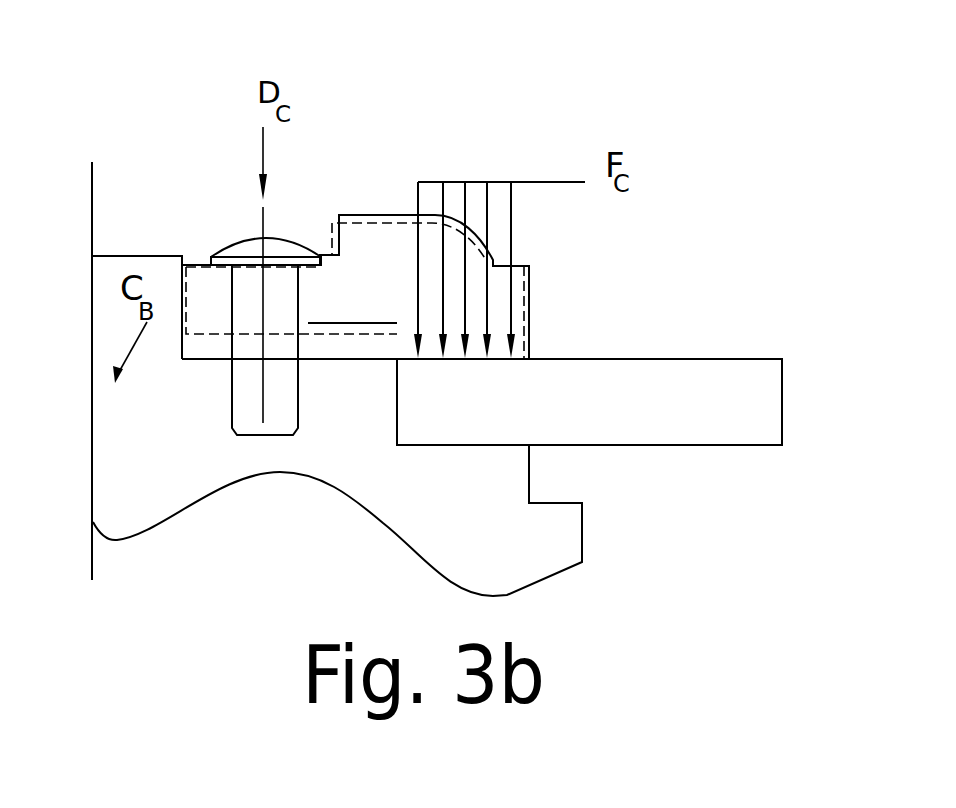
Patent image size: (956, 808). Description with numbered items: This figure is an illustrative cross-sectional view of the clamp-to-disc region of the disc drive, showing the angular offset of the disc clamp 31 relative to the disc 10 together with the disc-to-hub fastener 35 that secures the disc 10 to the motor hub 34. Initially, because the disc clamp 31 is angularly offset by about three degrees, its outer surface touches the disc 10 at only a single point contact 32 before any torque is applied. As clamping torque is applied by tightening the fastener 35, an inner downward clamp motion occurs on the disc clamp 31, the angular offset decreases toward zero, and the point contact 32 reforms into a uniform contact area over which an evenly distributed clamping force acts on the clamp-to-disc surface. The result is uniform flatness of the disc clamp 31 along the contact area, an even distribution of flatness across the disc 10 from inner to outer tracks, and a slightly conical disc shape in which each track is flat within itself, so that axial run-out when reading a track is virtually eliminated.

The disc 10 is at (682, 358).
The disc clamp 31 is at (396, 304).
The point contact 32 is at (529, 361).
The motor hub 34 is at (184, 455).
The fastener 35 is at (235, 238).